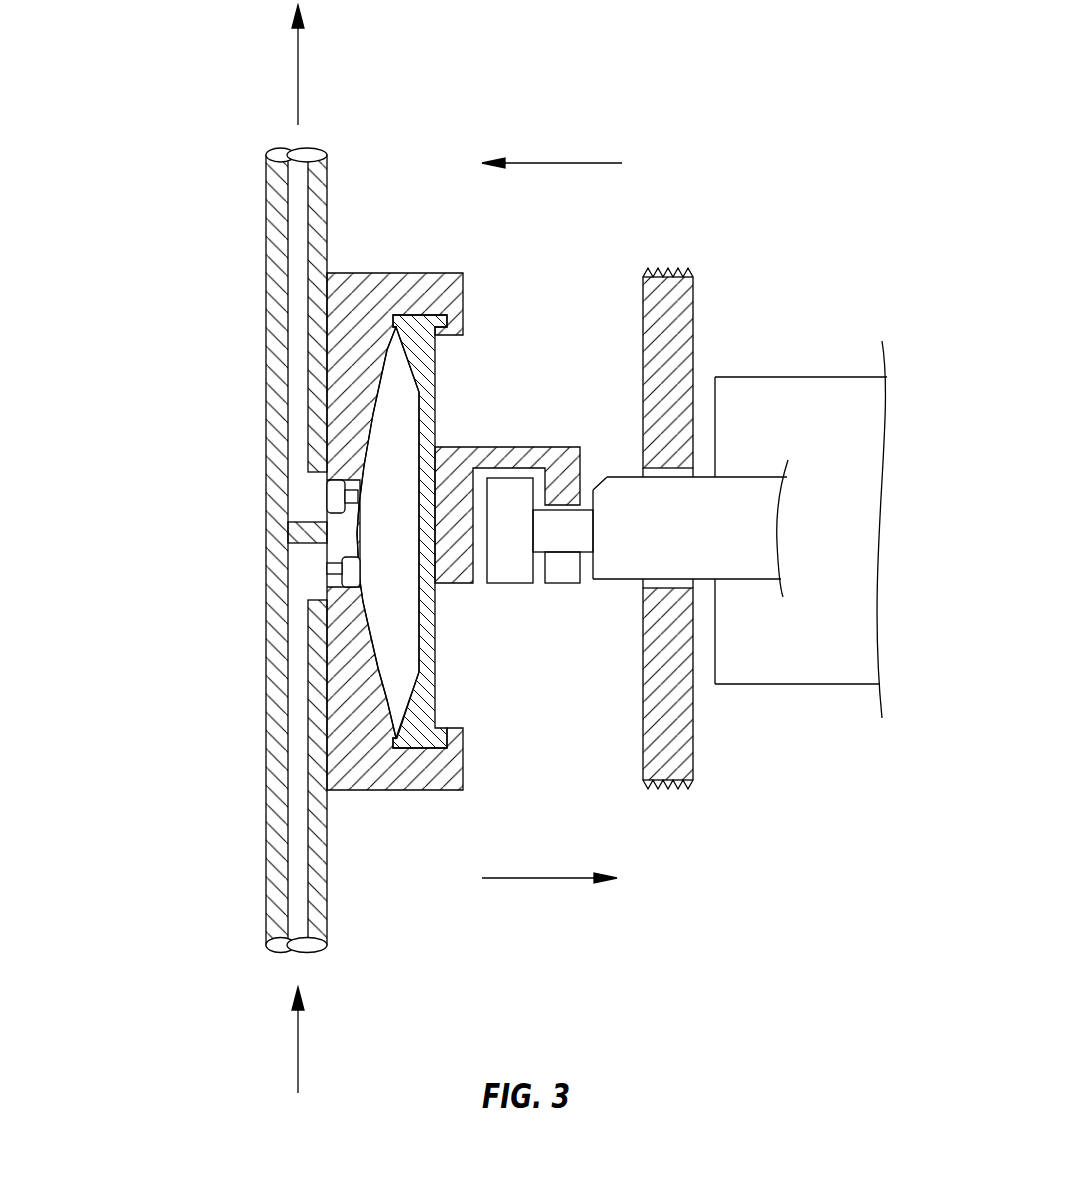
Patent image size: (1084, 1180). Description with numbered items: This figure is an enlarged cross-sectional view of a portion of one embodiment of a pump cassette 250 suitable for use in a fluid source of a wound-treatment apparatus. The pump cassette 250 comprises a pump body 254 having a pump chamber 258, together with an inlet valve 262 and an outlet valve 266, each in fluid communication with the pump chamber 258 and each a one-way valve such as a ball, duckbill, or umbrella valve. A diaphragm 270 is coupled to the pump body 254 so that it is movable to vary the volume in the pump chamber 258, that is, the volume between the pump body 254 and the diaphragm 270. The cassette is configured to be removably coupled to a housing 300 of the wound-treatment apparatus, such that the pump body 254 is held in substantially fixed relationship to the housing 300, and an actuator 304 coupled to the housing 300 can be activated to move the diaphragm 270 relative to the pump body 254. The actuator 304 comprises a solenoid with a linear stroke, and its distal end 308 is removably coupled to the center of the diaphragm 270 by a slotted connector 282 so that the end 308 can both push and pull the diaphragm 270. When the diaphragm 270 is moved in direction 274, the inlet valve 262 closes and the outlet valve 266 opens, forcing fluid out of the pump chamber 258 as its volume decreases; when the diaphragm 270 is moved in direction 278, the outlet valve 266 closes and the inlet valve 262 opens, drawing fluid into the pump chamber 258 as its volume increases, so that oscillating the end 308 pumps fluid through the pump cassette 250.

The pump cassette 250 is at (198, 98).
The pump body 254 is at (387, 790).
The pump chamber 258 is at (387, 697).
The inlet valve 262 is at (314, 576).
The outlet valve 266 is at (314, 490).
The diaphragm 270 is at (435, 352).
The direction 274 is at (550, 163).
The direction 278 is at (528, 878).
The slotted connector 282 is at (510, 447).
The housing 300 is at (693, 280).
The actuator 304 is at (782, 377).
The distal end 308 is at (508, 583).